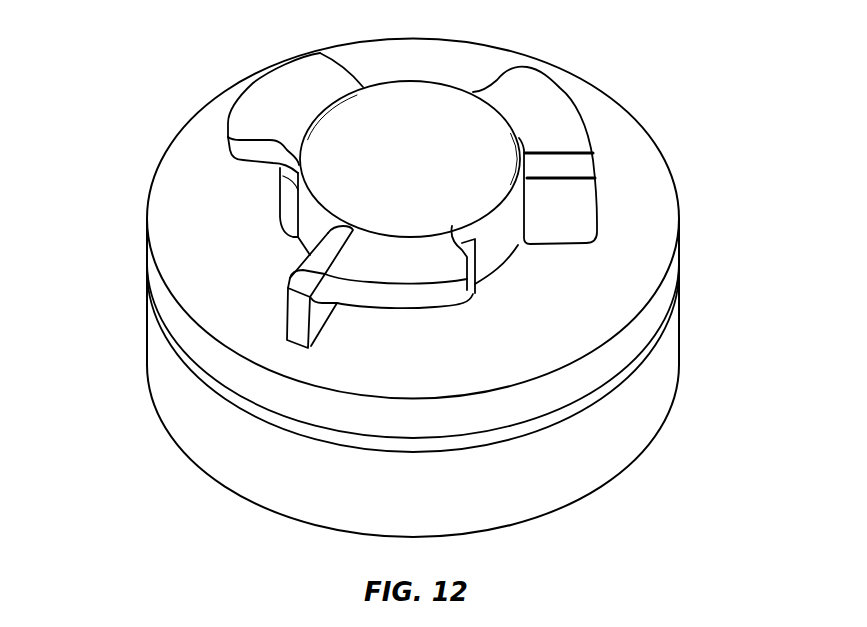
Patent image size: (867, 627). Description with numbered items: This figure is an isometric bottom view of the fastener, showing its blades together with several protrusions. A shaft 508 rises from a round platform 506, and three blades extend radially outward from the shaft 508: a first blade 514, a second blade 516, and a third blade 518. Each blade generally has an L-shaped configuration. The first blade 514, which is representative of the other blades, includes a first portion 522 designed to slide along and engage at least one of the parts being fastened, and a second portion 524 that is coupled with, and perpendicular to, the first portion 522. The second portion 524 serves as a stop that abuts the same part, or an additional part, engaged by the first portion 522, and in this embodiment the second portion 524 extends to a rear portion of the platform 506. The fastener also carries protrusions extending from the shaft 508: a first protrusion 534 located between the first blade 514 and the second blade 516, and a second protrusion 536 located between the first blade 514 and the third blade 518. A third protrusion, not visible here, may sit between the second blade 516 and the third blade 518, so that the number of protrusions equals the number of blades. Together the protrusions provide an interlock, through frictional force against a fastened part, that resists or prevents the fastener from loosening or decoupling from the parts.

The platform 506 is at (667, 210).
The shaft 508 is at (407, 214).
The first blade 514 is at (375, 349).
The second blade 516 is at (240, 105).
The third blade 518 is at (563, 86).
The first portion 522 is at (417, 308).
The second portion 524 is at (287, 336).
The first protrusion 534 is at (287, 201).
The second protrusion 536 is at (473, 273).